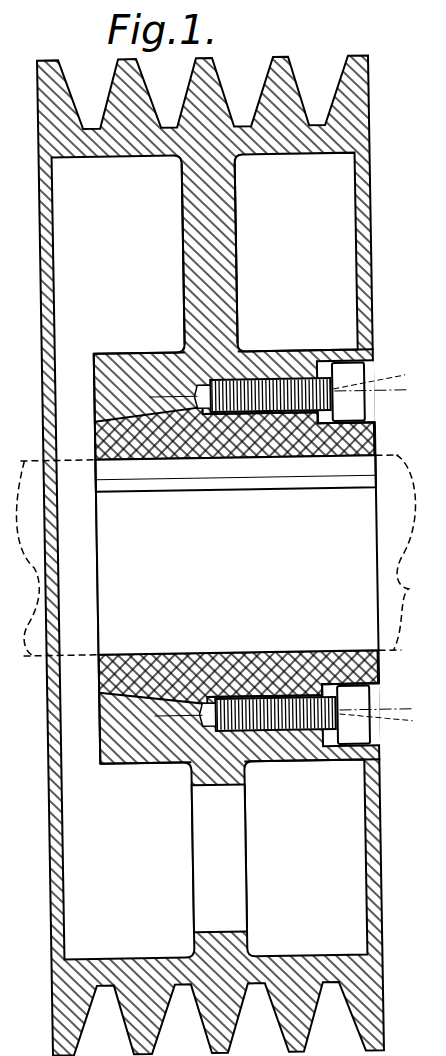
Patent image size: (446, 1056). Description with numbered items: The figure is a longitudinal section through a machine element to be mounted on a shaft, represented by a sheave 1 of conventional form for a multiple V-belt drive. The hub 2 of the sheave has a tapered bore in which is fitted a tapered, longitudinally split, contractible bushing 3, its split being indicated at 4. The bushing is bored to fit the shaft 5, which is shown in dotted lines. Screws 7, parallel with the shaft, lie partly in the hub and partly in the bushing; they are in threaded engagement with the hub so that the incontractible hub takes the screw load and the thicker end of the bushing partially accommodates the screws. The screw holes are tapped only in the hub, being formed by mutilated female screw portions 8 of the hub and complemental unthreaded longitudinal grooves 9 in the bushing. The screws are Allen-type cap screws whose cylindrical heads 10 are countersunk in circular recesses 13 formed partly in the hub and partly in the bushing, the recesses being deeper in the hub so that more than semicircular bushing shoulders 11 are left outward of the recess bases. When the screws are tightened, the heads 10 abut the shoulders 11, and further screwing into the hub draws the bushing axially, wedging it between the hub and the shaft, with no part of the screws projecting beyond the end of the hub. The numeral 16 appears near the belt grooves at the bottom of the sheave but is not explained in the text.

The sheave 1 is at (376, 214).
The hub 2 is at (122, 351).
The bushing 3 is at (211, 437).
The split 4 is at (278, 490).
The shaft 5 is at (406, 595).
The screws 7 is at (286, 379).
The mutilated female screw portions 8 is at (225, 388).
The unthreaded longitudinal grooves 9 is at (256, 419).
The screw heads 10 is at (377, 354).
The shoulders 11 is at (329, 505).
The circular recesses 13 is at (334, 363).
The belt groove 16 is at (266, 1049).